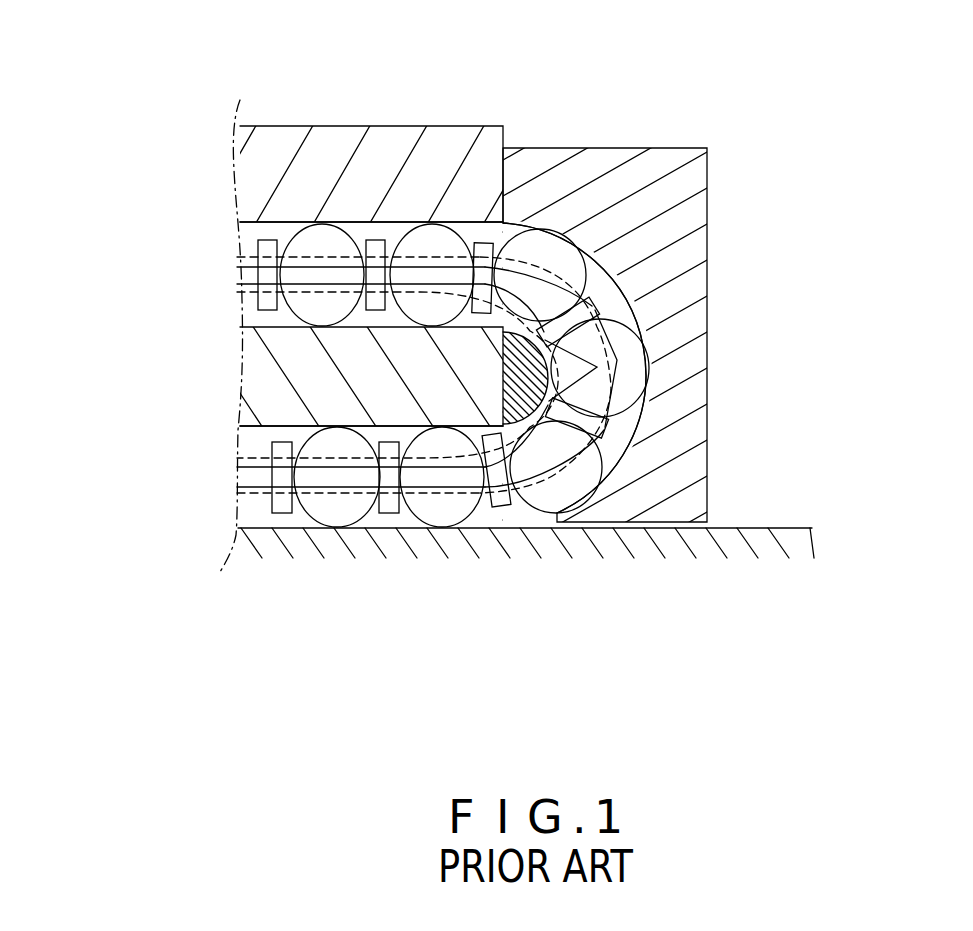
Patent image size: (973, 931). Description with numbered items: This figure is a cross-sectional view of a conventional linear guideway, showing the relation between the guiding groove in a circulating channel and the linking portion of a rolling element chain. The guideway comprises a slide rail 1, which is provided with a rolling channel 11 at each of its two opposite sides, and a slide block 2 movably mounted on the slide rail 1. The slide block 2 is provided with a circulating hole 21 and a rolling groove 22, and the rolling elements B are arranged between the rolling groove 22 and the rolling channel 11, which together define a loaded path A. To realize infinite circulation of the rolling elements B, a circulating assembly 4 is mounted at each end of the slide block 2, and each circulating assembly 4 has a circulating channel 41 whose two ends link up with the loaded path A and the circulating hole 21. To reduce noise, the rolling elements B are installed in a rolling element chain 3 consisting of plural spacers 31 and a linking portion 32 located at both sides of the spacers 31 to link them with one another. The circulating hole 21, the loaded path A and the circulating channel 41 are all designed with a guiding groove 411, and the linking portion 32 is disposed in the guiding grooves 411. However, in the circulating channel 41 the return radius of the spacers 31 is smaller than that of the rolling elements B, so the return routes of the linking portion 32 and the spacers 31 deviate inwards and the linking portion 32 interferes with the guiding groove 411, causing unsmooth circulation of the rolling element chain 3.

The slide rail 1 is at (592, 552).
The rolling channel 11 is at (758, 528).
The slide block 2 is at (330, 143).
The circulating hole 21 is at (253, 228).
The rolling groove 22 is at (260, 433).
The rolling element chain 3 is at (238, 278).
The spacer 31 is at (262, 302).
The linking portion 32 is at (597, 393).
The circulating assembly 4 is at (627, 158).
The circulating channel 41 is at (610, 290).
The guiding groove 411 is at (603, 325).
The loaded path A is at (250, 505).
The rolling element B is at (333, 515).